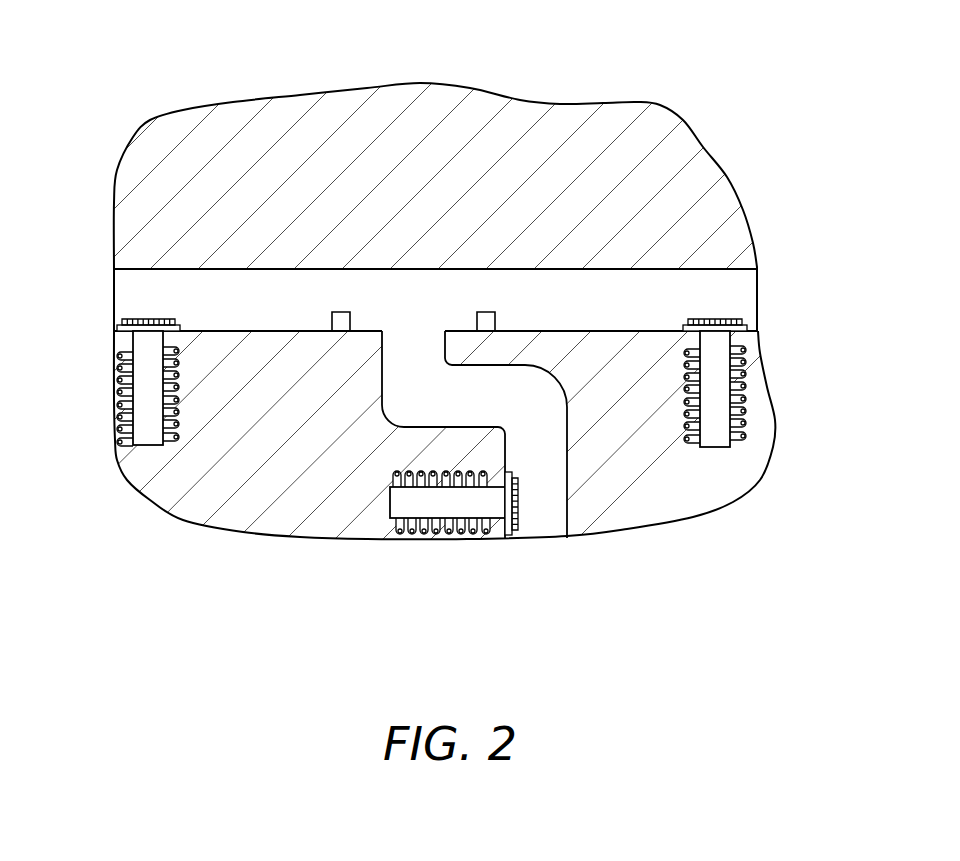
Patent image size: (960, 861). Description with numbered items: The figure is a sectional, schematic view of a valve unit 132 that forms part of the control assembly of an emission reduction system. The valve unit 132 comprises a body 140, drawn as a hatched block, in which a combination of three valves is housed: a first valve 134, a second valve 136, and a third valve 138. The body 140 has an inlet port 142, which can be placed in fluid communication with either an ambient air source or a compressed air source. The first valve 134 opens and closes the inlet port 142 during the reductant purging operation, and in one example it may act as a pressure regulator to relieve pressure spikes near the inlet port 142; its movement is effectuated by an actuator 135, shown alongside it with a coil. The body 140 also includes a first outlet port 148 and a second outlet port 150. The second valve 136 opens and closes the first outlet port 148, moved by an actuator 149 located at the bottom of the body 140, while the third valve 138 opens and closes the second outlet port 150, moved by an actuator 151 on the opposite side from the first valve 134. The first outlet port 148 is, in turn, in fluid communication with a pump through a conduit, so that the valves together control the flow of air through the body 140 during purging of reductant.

The valve unit 132 is at (750, 68).
The body 140 is at (697, 172).
The second outlet port 150 is at (745, 270).
The inlet port 142 is at (122, 270).
The first valve 134 is at (120, 320).
The actuator 135 is at (117, 394).
The third valve 138 is at (730, 313).
The actuator 151 is at (693, 447).
The actuator 149 is at (462, 531).
The second valve 136 is at (528, 520).
The first outlet port 148 is at (567, 538).